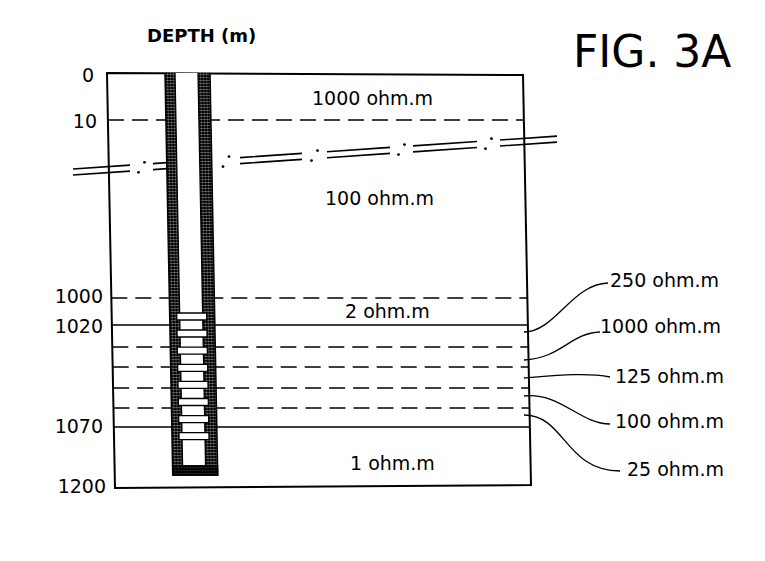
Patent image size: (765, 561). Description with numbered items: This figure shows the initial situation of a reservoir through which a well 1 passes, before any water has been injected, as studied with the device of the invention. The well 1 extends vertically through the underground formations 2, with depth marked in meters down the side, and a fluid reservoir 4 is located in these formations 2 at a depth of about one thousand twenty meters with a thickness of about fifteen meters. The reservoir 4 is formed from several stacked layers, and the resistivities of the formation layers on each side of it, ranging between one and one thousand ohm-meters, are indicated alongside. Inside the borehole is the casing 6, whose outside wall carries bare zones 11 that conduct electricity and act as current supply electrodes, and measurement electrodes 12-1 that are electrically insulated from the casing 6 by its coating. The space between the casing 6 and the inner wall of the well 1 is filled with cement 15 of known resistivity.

The well 1 is at (202, 207).
The underground formations 2 is at (130, 217).
The fluid reservoir 4 is at (122, 372).
The casing 6 is at (188, 251).
The bare zones 11 is at (179, 439).
The measurement electrodes 12-1 is at (211, 441).
The cement 15 is at (214, 480).